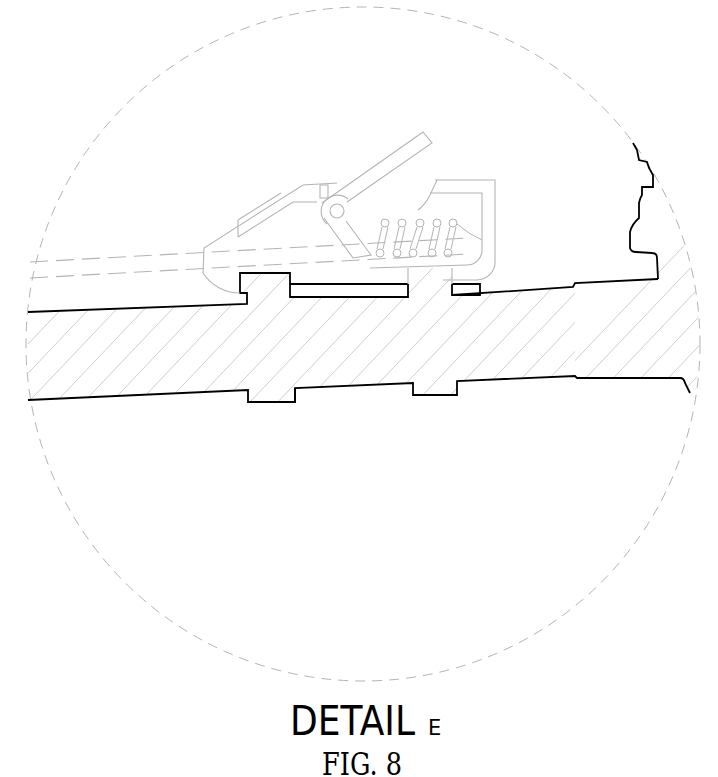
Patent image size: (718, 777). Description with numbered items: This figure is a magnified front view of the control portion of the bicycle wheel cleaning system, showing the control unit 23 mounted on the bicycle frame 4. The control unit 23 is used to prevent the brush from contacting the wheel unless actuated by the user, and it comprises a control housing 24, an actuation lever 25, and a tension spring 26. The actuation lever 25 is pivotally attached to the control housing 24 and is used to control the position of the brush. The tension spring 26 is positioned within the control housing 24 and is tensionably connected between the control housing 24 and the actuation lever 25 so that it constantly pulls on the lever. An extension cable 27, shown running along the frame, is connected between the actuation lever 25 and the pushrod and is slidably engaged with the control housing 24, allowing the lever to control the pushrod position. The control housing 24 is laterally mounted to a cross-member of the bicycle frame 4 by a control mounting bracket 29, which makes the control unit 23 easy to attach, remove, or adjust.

The bicycle frame 4 is at (628, 376).
The control unit 23 is at (213, 203).
The control housing 24 is at (287, 192).
The actuation lever 25 is at (400, 153).
The tension spring 26 is at (382, 227).
The extension cable 27 is at (143, 257).
The control mounting bracket 29 is at (281, 400).